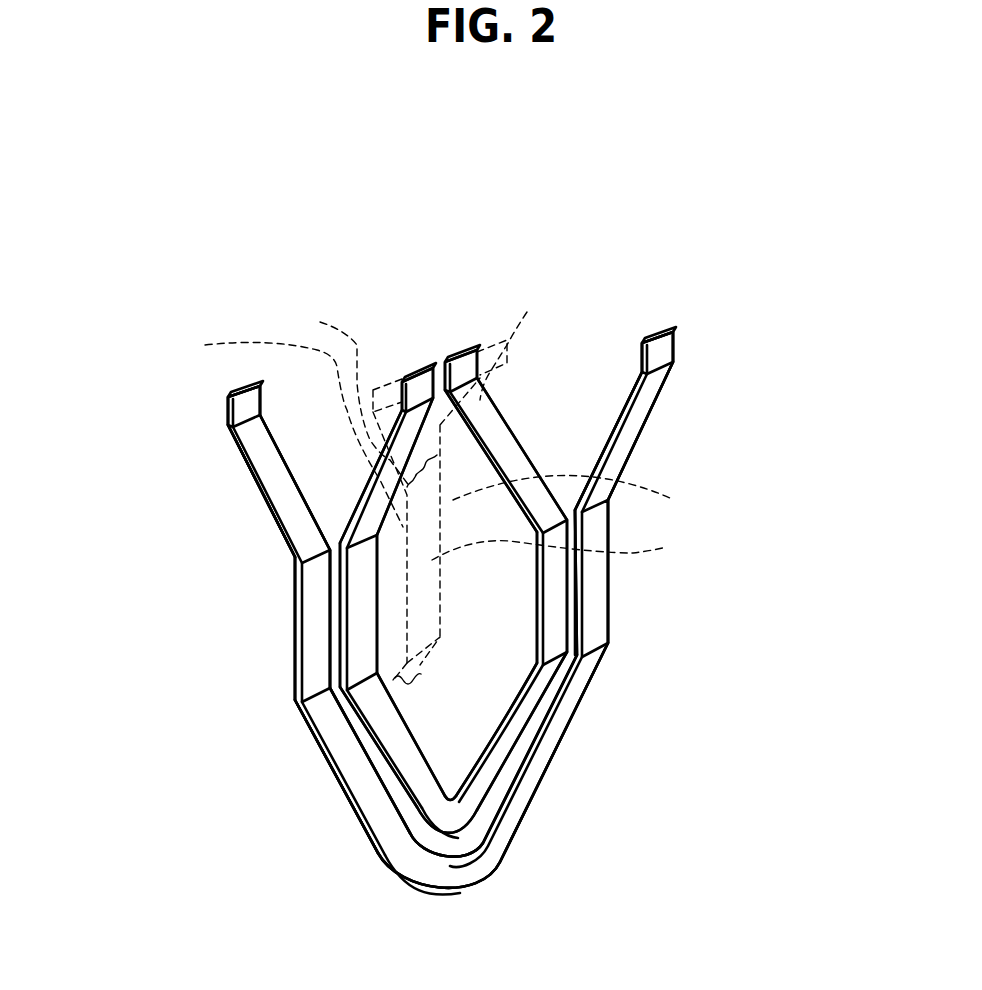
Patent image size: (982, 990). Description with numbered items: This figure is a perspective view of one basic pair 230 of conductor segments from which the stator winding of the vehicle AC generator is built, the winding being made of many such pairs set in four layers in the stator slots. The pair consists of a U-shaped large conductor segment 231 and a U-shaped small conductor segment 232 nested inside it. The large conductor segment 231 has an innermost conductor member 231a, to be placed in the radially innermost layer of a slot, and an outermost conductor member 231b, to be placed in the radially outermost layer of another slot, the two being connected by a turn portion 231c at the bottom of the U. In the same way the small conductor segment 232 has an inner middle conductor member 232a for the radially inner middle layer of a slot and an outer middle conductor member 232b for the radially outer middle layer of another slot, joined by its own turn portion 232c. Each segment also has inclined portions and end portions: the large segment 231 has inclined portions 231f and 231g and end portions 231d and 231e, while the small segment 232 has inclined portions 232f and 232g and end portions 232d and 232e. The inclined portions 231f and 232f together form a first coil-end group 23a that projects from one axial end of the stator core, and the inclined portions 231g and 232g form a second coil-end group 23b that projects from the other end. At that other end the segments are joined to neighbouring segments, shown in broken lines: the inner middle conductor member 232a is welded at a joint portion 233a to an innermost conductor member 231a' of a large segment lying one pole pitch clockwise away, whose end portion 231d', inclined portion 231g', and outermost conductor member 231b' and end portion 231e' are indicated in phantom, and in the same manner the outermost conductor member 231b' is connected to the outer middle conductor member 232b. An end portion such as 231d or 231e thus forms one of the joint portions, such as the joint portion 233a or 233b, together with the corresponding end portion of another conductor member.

The basic pair 230 is at (376, 862).
The large conductor segment 231 is at (643, 440).
The innermost conductor member 231a is at (235, 625).
The outermost conductor member 231b is at (682, 578).
The turn portion 231c is at (440, 873).
The end portion 231d is at (174, 423).
The end portion 231e is at (733, 324).
The inclined portion 231f is at (338, 757).
The inclined portion 231g is at (450, 459).
The innermost conductor member 231a' is at (269, 425).
The outermost conductor member 231b' is at (603, 544).
The end portion 231d' is at (322, 391).
The end portion 231e' is at (535, 340).
The inclined portion 231g' is at (614, 495).
The small conductor segment 232 is at (552, 465).
The inner middle conductor member 232a is at (363, 642).
The outer middle conductor member 232b is at (550, 640).
The turn portion 232c is at (450, 820).
The end portion 232d is at (427, 365).
The end portion 232e is at (468, 348).
The inclined portion 232f is at (510, 737).
The inclined portion 232g is at (367, 480).
The joint portion 233a is at (391, 357).
The joint portion 233b is at (487, 313).
The first coil-end group 23a is at (332, 810).
The second coil-end group 23b is at (247, 487).